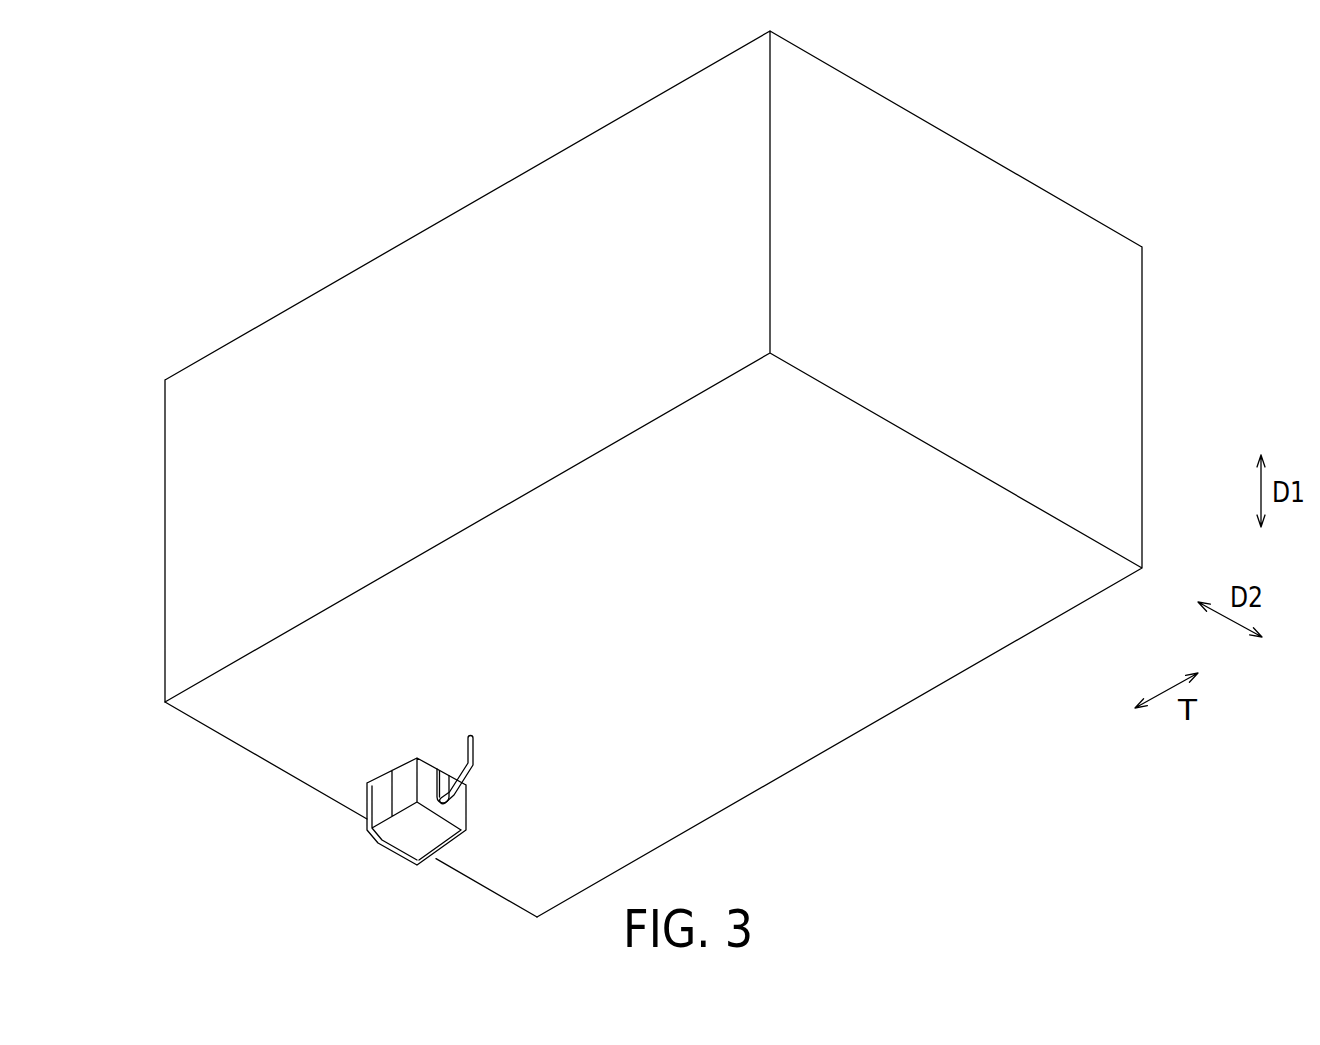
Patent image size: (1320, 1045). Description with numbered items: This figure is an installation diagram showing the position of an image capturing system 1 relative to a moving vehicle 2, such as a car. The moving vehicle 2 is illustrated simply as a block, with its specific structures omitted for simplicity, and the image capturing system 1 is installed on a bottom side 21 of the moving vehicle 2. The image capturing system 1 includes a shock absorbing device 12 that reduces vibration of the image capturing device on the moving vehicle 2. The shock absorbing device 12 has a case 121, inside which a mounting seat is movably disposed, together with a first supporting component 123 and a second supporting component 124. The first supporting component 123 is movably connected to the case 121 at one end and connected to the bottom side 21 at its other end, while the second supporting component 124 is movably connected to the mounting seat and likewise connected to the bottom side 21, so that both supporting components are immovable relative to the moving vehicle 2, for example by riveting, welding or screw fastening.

The image capturing system 1 is at (402, 767).
The moving vehicle 2 is at (398, 160).
The shock absorbing device 12 is at (428, 741).
The case 121 is at (393, 778).
The first supporting component 123 is at (440, 772).
The second supporting component 124 is at (475, 745).
The bottom side 21 is at (813, 723).